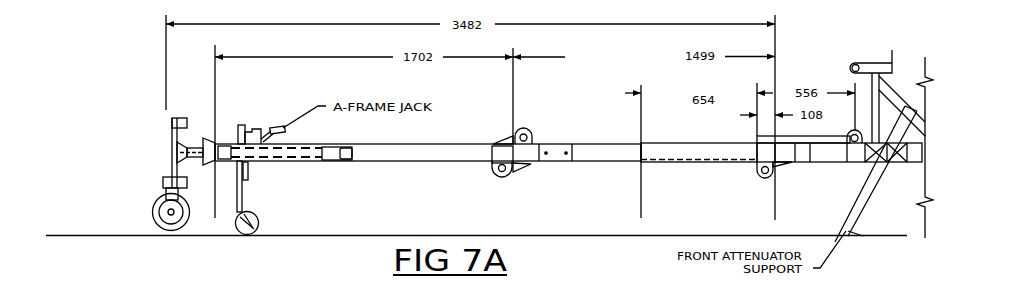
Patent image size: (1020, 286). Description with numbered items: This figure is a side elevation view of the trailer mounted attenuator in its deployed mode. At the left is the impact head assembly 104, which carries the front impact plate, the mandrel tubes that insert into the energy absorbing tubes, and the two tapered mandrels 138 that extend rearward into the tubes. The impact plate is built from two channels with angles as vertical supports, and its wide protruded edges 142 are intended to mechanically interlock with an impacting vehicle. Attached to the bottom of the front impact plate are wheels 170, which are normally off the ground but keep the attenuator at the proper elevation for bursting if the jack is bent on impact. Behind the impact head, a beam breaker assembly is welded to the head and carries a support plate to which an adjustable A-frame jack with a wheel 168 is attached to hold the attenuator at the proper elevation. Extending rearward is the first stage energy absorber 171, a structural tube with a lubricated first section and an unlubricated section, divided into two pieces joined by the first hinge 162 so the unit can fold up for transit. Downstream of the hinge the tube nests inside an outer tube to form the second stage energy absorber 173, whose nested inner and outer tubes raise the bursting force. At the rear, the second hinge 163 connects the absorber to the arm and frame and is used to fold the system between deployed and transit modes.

The impact head assembly 104 is at (171, 133).
The tapered mandrel 138 is at (208, 138).
The wide protruded edges 142 is at (171, 165).
The first hinge 162 is at (519, 169).
The second hinge 163 is at (850, 167).
The wheel 168 is at (253, 217).
The wheels 170 is at (182, 220).
The first stage energy absorber 171 is at (215, 212).
The second stage energy absorber 173 is at (641, 213).